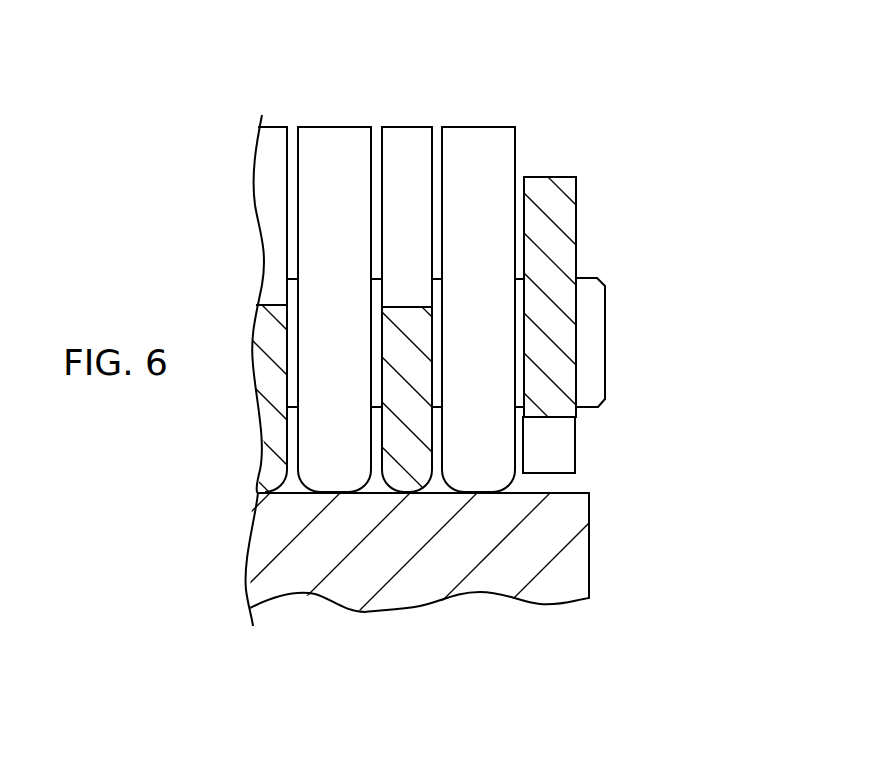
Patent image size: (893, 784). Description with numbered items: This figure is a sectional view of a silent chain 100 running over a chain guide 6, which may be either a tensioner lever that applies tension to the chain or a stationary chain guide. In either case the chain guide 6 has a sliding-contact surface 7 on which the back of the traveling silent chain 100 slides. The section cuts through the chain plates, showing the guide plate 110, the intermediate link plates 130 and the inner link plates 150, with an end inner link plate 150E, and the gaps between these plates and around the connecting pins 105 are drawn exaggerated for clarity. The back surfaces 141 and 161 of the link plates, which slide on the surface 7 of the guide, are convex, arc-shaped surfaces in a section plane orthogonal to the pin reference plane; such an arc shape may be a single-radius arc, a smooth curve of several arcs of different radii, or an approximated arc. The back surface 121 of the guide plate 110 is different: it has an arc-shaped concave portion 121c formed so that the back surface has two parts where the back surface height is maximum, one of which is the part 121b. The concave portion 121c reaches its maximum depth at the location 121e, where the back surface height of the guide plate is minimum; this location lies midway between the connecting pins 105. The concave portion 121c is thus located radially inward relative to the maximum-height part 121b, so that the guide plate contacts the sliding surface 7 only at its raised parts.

The silent chain 100 is at (634, 86).
The intermediate link plates 130 is at (407, 140).
The inner link plates 150 is at (315, 192).
The end semiconductor layer 150E is at (492, 138).
The back surface 141 is at (373, 493).
The back surface 161 is at (510, 472).
The guide plate 110 is at (567, 252).
The connecting pins 105 is at (597, 338).
The back surface 121 is at (569, 533).
The arc-shaped concave portion 121c is at (537, 440).
The maximum depth location 121e is at (553, 419).
The maximum height part 121b is at (553, 478).
The sliding-contact surface 7 is at (582, 493).
The chain guide 6 is at (310, 556).